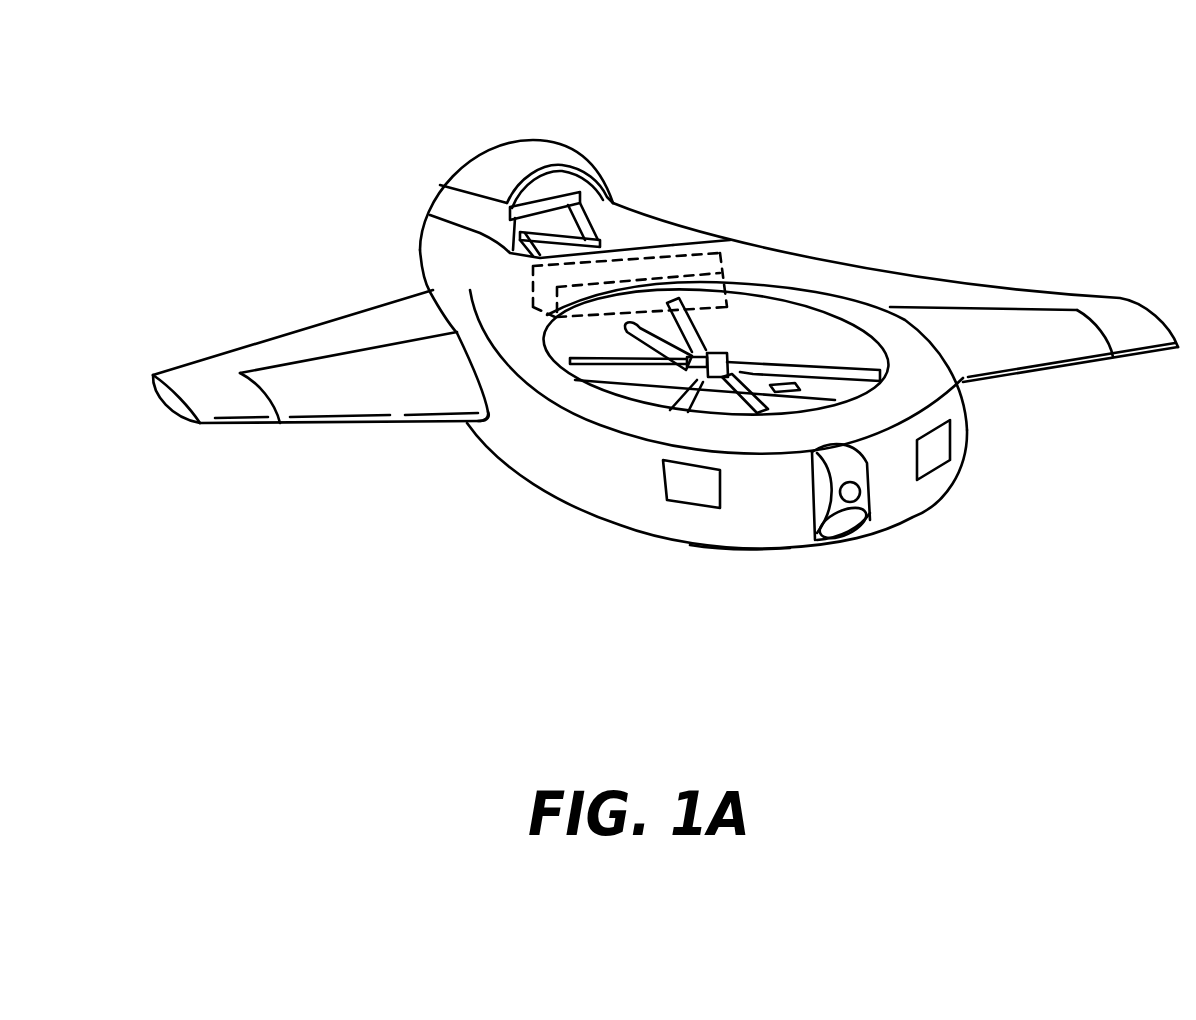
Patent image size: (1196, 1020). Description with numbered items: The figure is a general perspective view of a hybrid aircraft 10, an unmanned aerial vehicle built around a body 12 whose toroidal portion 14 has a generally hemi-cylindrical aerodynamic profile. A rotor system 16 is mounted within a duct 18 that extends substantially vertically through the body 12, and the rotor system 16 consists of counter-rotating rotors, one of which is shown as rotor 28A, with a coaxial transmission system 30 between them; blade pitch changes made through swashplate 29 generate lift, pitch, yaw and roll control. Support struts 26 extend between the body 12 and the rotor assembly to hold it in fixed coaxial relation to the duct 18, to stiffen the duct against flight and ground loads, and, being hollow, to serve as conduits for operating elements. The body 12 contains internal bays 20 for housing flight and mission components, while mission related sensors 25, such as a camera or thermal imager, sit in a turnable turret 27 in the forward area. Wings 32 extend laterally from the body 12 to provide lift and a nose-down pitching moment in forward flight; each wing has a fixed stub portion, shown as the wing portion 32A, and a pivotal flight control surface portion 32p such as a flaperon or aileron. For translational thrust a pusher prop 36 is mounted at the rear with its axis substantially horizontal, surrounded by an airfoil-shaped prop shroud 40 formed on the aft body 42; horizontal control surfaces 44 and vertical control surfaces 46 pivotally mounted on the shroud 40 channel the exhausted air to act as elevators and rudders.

The hybrid aircraft 10 is at (634, 106).
The body 12 is at (910, 333).
The toroidal portion 14 is at (907, 507).
The rotor system 16 is at (716, 324).
The duct 18 is at (833, 347).
The internal bays 20 is at (533, 283).
The mission related sensors 25 is at (858, 500).
The support struts 26 is at (627, 335).
The turnable turret 27 is at (813, 515).
The control vane 28A is at (888, 393).
The lower skirt 29 is at (735, 547).
The transmission system 30 is at (728, 356).
The wings 32 is at (1100, 297).
The left wing aileron 32A is at (320, 405).
The pivotal flight control surface portion 32p is at (207, 363).
The pusher prop 36 is at (500, 205).
The prop shroud 40 is at (555, 153).
The aft body 42 is at (653, 238).
The horizontal control surfaces 44 is at (550, 193).
The vertical control surfaces 46 is at (613, 202).